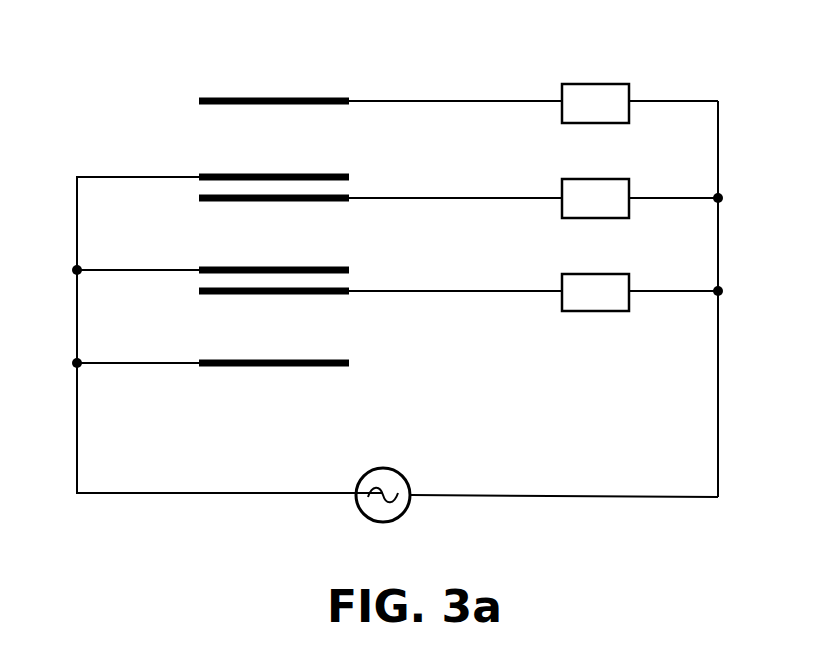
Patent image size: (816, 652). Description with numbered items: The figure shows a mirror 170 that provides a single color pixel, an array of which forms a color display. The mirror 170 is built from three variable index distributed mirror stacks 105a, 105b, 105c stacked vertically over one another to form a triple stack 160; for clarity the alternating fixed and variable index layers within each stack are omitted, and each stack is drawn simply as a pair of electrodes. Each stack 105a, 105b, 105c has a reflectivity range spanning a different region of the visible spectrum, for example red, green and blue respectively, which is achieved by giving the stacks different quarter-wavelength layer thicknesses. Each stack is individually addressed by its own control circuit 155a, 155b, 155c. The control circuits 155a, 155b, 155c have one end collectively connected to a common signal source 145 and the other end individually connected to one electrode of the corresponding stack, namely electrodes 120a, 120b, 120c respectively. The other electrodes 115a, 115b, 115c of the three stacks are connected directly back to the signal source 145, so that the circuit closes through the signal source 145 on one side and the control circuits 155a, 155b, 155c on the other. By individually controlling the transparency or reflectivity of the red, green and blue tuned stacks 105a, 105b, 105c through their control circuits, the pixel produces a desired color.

The mirror 170 is at (135, 95).
The triple stack 160 is at (440, 375).
The signal source 145 is at (358, 514).
The stack 105a is at (338, 327).
The stack 105b is at (338, 234).
The stack 105c is at (337, 139).
The electrode 115a is at (258, 359).
The electrode 115b is at (258, 266).
The electrode 115c is at (258, 172).
The electrode 120a is at (308, 294).
The electrode 120b is at (308, 201).
The electrode 120c is at (308, 104).
The control circuit 155a is at (605, 274).
The control circuit 155b is at (605, 179).
The control circuit 155c is at (605, 84).